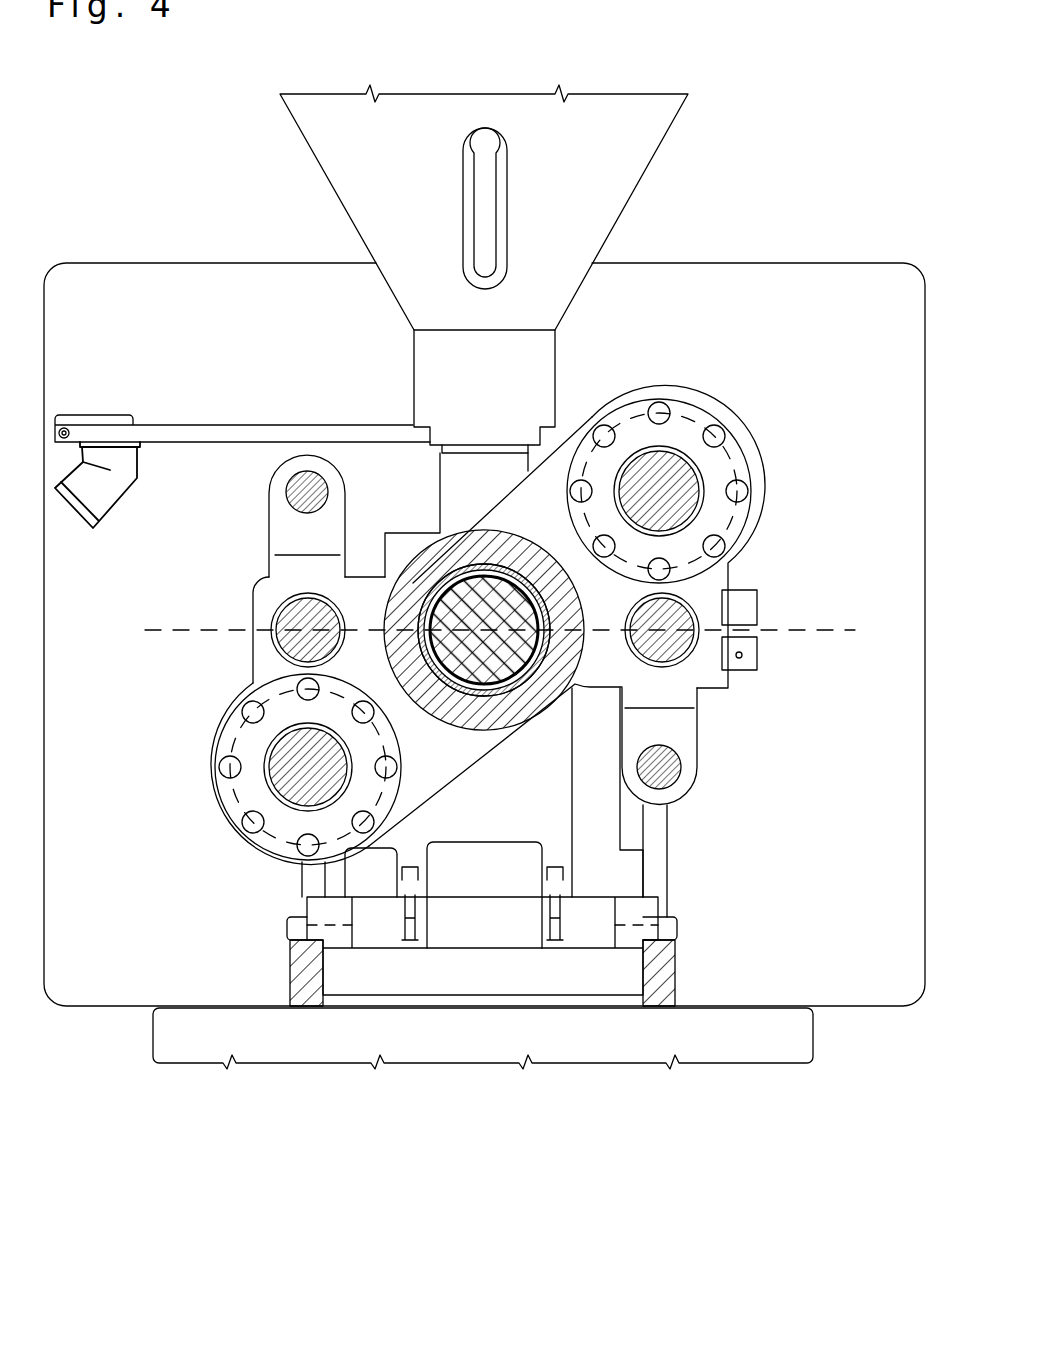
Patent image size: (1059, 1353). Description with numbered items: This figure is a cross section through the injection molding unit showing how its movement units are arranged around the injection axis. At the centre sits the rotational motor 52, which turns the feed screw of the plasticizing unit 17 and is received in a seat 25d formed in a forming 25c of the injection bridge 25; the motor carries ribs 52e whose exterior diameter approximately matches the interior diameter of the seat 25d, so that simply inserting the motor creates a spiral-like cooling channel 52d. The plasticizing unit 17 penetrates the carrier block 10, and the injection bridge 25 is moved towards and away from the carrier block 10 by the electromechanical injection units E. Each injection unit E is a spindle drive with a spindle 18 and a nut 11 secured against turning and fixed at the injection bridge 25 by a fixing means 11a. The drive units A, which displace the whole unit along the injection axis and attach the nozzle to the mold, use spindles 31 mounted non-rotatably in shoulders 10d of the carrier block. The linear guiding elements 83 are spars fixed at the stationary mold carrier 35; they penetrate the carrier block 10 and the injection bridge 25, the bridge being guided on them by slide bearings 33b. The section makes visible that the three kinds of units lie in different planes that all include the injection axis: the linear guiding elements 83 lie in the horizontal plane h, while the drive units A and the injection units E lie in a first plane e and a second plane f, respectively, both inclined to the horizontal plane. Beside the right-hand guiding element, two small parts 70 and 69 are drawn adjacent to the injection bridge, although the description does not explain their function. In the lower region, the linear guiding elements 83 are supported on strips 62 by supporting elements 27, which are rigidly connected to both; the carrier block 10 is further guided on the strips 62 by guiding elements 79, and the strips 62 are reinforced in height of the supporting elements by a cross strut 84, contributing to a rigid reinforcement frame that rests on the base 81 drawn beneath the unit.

The carrier block 10 is at (477, 480).
The shoulders of the carrier block 10d is at (277, 545).
The nut 11 is at (740, 480).
The fixing means 11a is at (722, 552).
The plasticizing unit 17 is at (387, 550).
The spindle 18 is at (580, 560).
The injection bridge 25 is at (440, 768).
The forming of the injection bridge 25c is at (503, 553).
The seat 25d is at (492, 688).
The supporting elements 27 is at (655, 865).
The spindle 31 is at (313, 477).
The slide bearings 33b is at (267, 653).
The stationary mold carrier 35 is at (190, 354).
The rotational motor 52 is at (520, 688).
The cooling channel 52d is at (412, 570).
The ribs 52e is at (550, 591).
The strips 62 is at (653, 960).
The adjusting bolt 69 is at (740, 655).
The stopper 70 is at (742, 610).
The guiding elements 79 is at (382, 870).
The base 81 is at (773, 1037).
The linear guiding elements 83 is at (295, 620).
The cross strut 84 is at (507, 977).
The drive units A is at (332, 470).
The injection units E is at (763, 440).
The first plane e is at (277, 475).
The second plane f is at (568, 565).
The horizontal plane h is at (498, 631).